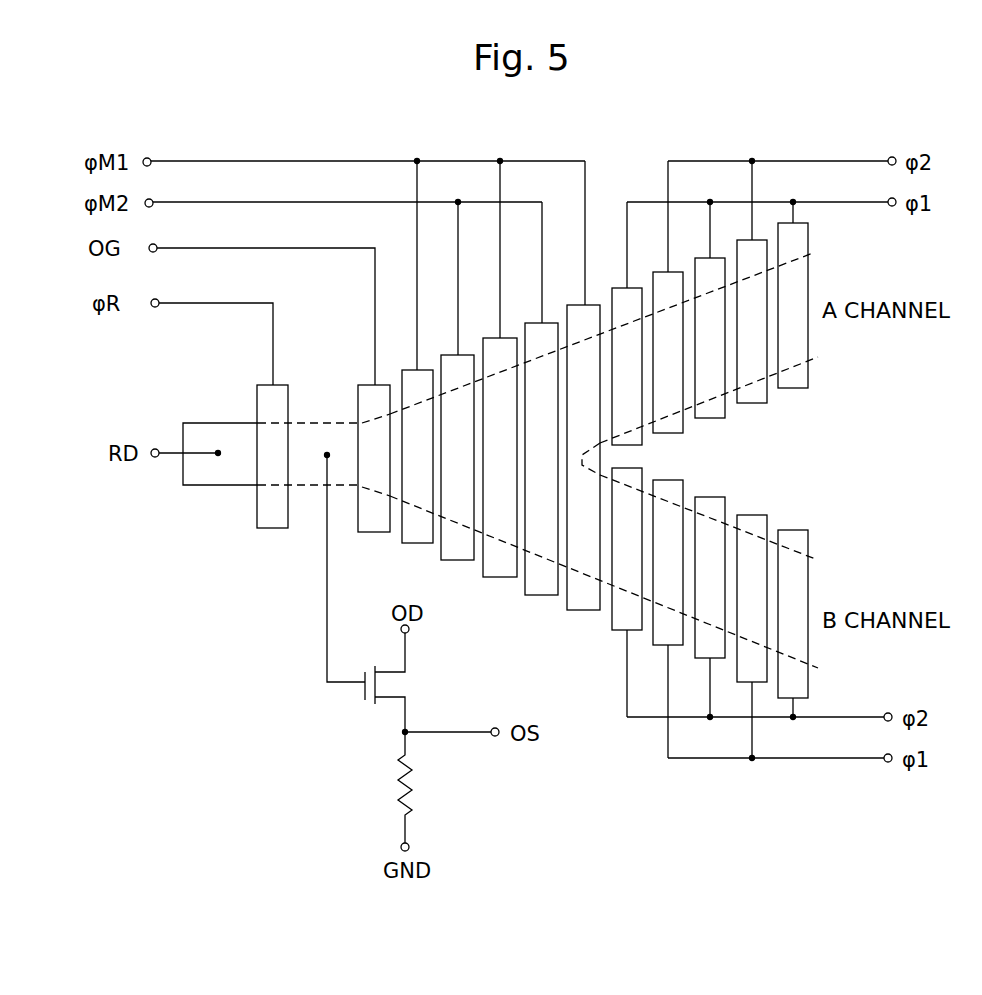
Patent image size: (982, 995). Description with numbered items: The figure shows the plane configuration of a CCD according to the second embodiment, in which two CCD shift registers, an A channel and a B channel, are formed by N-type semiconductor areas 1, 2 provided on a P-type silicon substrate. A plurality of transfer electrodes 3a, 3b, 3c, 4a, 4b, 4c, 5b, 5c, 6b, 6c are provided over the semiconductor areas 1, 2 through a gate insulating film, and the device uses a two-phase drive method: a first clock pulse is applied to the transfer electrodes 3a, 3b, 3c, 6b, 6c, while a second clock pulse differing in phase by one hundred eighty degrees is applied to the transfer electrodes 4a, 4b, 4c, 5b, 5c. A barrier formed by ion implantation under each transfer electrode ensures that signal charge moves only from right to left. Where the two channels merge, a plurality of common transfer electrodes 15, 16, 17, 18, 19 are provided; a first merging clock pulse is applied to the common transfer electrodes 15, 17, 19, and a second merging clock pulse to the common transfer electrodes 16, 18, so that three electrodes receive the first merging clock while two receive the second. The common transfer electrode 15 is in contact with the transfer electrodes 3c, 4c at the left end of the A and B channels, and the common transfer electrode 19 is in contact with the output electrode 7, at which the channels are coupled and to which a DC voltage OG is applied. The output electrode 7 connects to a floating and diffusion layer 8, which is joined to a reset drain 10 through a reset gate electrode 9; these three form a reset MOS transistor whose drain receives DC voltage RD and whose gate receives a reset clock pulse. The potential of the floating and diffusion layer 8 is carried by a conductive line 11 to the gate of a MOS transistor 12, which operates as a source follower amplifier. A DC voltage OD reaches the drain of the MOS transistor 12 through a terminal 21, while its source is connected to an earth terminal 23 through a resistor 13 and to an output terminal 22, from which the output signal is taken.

The N-type semiconductor area 1 is at (820, 345).
The N-type semiconductor area 2 is at (818, 593).
The transfer electrode 3a is at (808, 385).
The transfer electrode 3b is at (725, 417).
The transfer electrode 3c is at (642, 447).
The transfer electrode 4a is at (808, 531).
The transfer electrode 4b is at (725, 498).
The transfer electrode 4c is at (640, 470).
The transfer electrode 5b is at (767, 403).
The transfer electrode 5c is at (683, 433).
The transfer electrode 6b is at (767, 516).
The transfer electrode 6c is at (683, 482).
The output electrode 7 is at (372, 536).
The floating and diffusion layer 8 is at (312, 484).
The reset gate electrode 9 is at (272, 524).
The reset drain 10 is at (222, 482).
The conductive line 11 is at (327, 664).
The MOS transistor 12 is at (365, 706).
The resistor 13 is at (395, 791).
The common transfer electrode 15 is at (585, 614).
The common transfer electrode 16 is at (542, 599).
The common transfer electrode 17 is at (500, 581).
The common transfer electrode 18 is at (460, 564).
The common transfer electrode 19 is at (418, 548).
The terminal 21 is at (401, 630).
The output terminal 22 is at (494, 727).
The earth terminal 23 is at (410, 845).